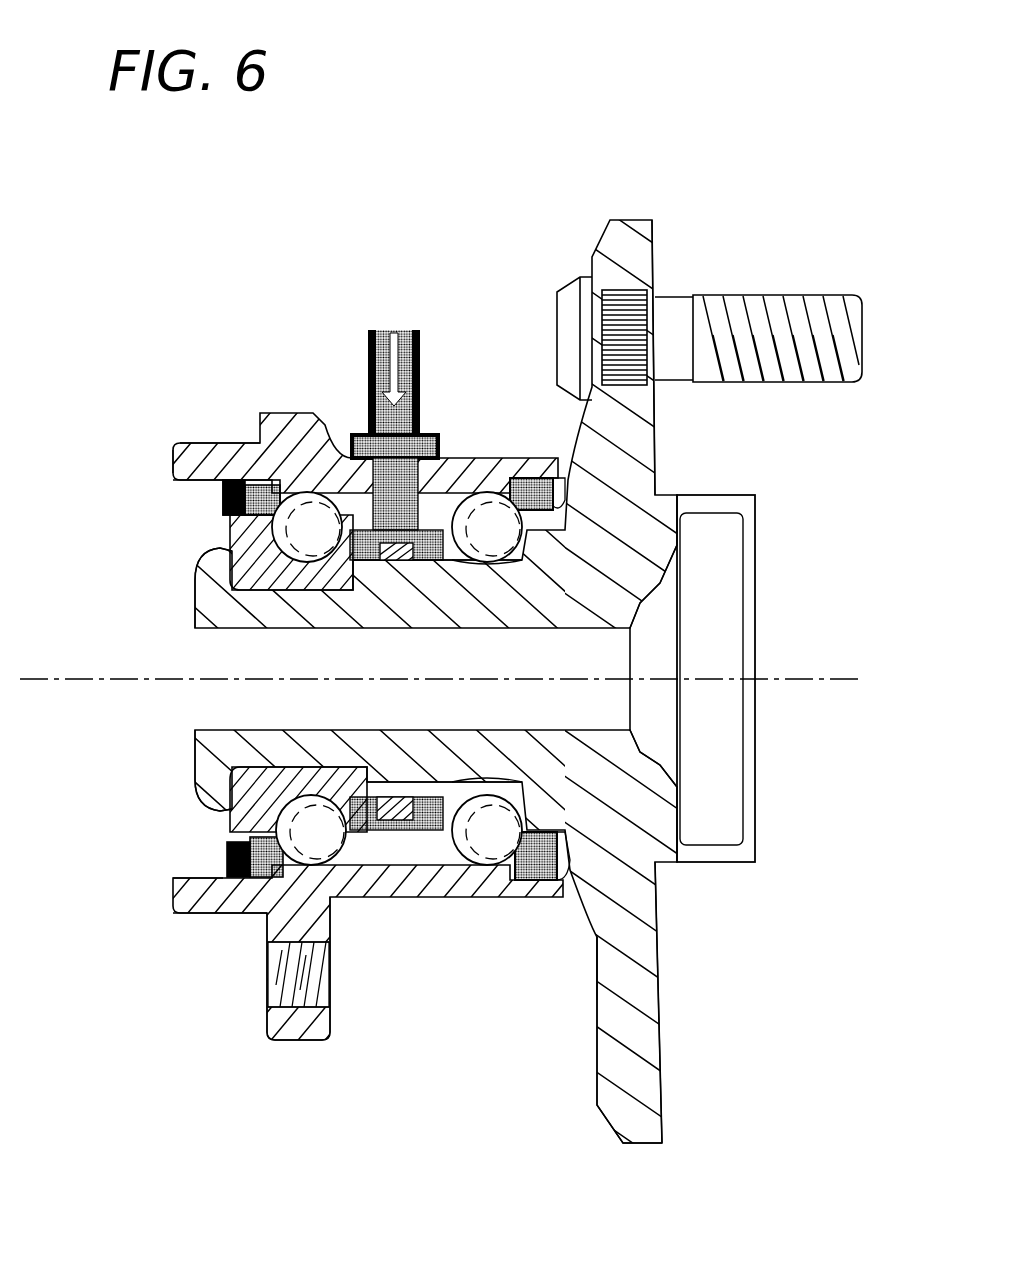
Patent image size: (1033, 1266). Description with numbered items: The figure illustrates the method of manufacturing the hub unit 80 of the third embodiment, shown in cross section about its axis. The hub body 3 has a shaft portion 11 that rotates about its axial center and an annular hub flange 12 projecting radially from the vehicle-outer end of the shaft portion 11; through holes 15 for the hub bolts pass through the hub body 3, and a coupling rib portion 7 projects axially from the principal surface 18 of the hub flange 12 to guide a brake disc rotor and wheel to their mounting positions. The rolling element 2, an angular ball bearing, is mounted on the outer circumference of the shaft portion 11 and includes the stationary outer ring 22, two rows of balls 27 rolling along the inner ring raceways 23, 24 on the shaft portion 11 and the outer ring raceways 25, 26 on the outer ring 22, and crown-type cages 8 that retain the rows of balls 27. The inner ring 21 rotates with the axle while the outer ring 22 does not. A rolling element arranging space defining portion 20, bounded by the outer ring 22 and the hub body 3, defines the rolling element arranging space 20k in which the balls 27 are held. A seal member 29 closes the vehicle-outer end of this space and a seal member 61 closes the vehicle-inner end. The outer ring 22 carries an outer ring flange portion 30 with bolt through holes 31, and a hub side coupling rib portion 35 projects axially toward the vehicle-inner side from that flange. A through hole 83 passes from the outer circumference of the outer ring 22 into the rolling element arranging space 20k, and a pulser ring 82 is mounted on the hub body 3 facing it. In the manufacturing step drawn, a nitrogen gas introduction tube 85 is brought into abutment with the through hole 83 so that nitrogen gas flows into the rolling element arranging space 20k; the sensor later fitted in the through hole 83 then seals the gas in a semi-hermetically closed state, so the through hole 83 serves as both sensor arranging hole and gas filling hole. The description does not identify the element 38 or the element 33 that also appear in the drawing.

The hub unit 80 is at (535, 268).
The nitrogen gas introduction tube 85 is at (418, 362).
The through hole 83 is at (447, 450).
The pulser ring 82 is at (432, 505).
The through holes 15 is at (659, 291).
The principal surface 18 is at (657, 288).
The bolt head 38 is at (562, 292).
The coupling rib portion 7 is at (717, 494).
The outer ring raceway 25 is at (620, 541).
The shaft portion 11 is at (587, 753).
The inner ring raceway 23 is at (667, 865).
The hub body 3 is at (699, 889).
The hub flange 12 is at (645, 1143).
The clinched portion 33 is at (197, 785).
The rolling element arranging space defining portion 20 is at (440, 786).
The rolling element arranging space 20k is at (398, 840).
The inner ring 21 is at (220, 835).
The rolling element 2 is at (424, 902).
The outer ring 22 is at (470, 900).
The hub side coupling rib portion 35 is at (220, 442).
The seal member 61 is at (223, 487).
The outer ring raceway 26 is at (223, 499).
The inner ring raceway 24 is at (232, 858).
The seal member 29 is at (542, 470).
The balls 27 is at (523, 890).
The crown-type cages 8 is at (468, 866).
The bolt through holes 31 is at (268, 975).
The outer ring flange portion 30 is at (300, 1042).